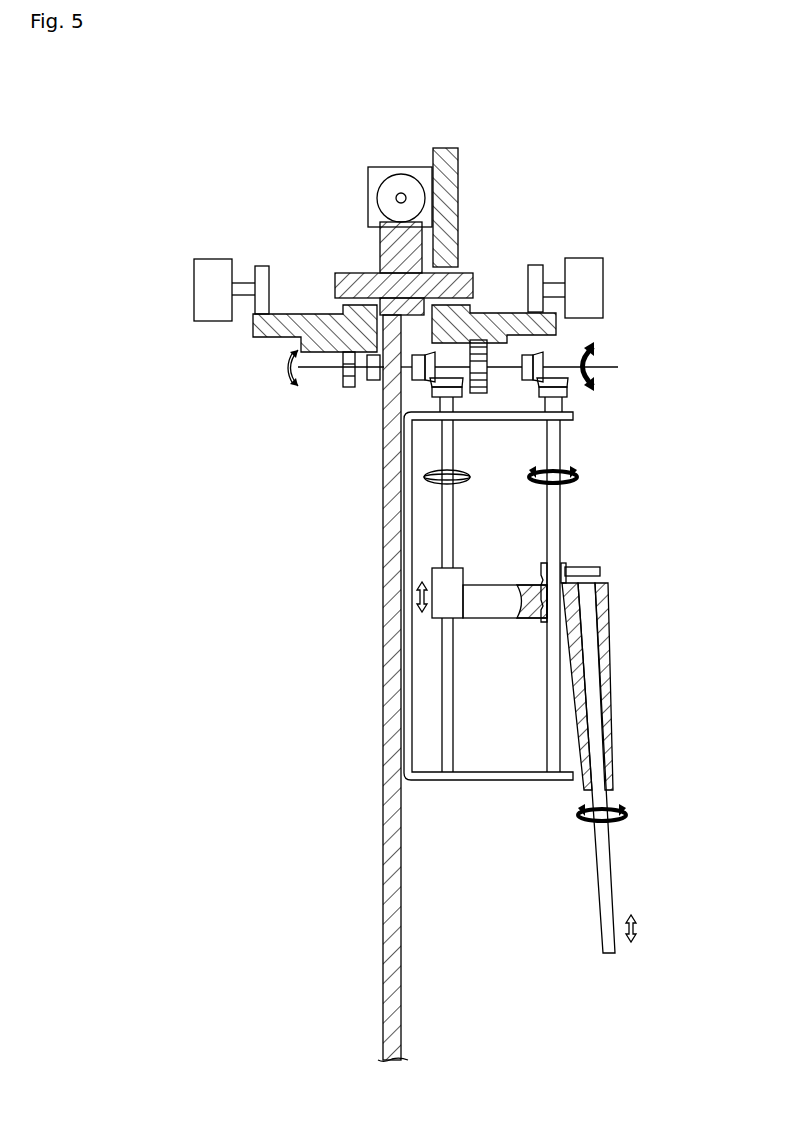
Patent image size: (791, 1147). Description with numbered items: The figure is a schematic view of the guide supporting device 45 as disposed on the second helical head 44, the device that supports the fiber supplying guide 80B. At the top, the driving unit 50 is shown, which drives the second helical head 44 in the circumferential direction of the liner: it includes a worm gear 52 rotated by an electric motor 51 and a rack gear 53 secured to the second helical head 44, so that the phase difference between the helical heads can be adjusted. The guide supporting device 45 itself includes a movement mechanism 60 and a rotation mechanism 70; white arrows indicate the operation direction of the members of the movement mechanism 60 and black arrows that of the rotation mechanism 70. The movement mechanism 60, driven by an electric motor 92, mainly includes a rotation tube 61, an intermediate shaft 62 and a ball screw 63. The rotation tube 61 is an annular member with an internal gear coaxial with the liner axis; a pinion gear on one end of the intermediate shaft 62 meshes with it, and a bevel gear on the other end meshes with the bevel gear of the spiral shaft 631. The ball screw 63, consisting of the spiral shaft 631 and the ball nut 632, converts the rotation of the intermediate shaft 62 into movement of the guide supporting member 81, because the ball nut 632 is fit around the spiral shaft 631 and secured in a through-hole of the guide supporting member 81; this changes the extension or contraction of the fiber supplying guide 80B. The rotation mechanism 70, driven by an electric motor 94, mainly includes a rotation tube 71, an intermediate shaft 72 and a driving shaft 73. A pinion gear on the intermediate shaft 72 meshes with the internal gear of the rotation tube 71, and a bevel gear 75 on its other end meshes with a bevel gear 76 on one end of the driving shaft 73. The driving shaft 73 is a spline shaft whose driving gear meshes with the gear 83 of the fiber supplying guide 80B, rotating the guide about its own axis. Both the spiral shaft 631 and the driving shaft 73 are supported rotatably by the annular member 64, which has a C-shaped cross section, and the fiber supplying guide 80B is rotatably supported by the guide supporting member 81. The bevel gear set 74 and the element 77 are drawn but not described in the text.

The second helical head 44 is at (296, 652).
The guide supporting device 45 is at (355, 695).
The driving unit 50 is at (376, 128).
The electric motor 51 is at (368, 185).
The worm gear 52 is at (387, 167).
The rack gear 53 is at (380, 222).
The movement mechanism 60 is at (280, 238).
The rotation tube 61 is at (260, 337).
The intermediate shaft 62 is at (368, 374).
The ball screw 63 is at (491, 650).
The spiral shaft 631 is at (446, 522).
The ball nut 632 is at (468, 581).
The annular member 64 is at (418, 737).
The rotation mechanism 70 is at (519, 238).
The rotation tube 71 is at (500, 313).
The intermediate shaft 72 is at (487, 346).
The driving shaft 73 is at (555, 521).
The first bevel gear set 74 is at (478, 395).
The bevel gear 75 is at (545, 355).
The bevel gear 76 is at (560, 383).
The coupling 77 is at (541, 568).
The fiber supplying guide 80B is at (606, 855).
The guide supporting member 81 is at (613, 731).
The gear 83 is at (600, 571).
The electric motor 92 is at (213, 270).
The electric motor 94 is at (583, 268).